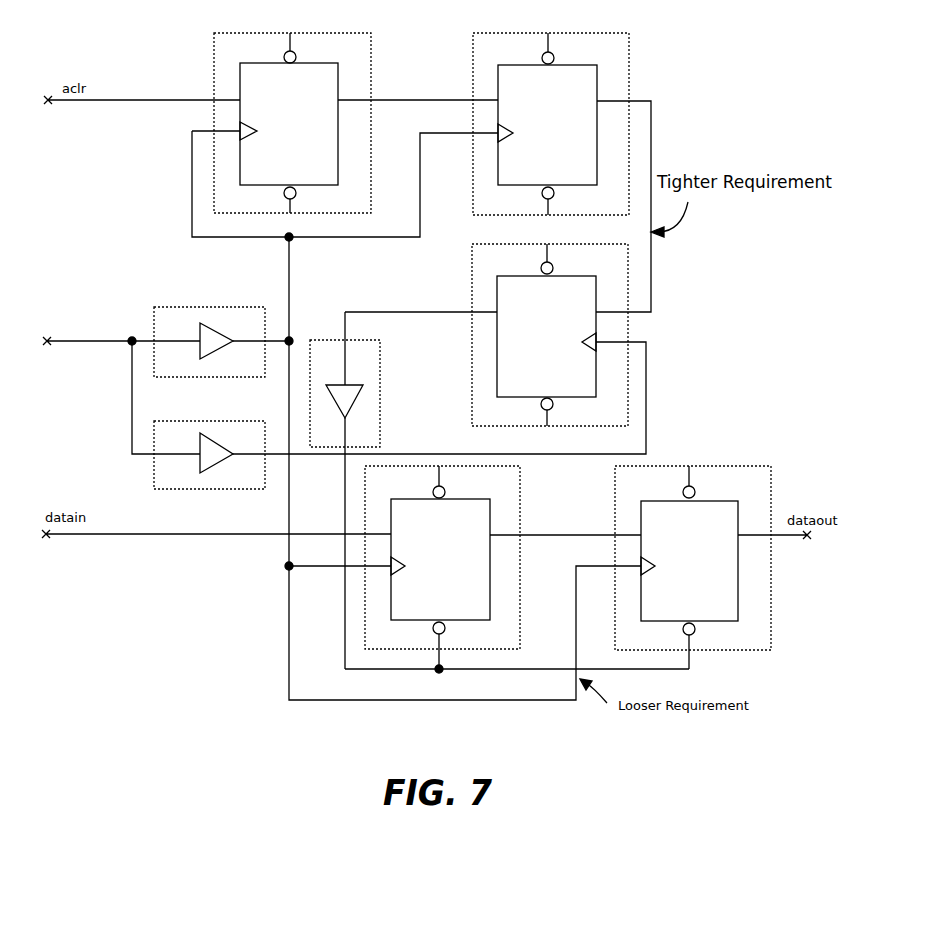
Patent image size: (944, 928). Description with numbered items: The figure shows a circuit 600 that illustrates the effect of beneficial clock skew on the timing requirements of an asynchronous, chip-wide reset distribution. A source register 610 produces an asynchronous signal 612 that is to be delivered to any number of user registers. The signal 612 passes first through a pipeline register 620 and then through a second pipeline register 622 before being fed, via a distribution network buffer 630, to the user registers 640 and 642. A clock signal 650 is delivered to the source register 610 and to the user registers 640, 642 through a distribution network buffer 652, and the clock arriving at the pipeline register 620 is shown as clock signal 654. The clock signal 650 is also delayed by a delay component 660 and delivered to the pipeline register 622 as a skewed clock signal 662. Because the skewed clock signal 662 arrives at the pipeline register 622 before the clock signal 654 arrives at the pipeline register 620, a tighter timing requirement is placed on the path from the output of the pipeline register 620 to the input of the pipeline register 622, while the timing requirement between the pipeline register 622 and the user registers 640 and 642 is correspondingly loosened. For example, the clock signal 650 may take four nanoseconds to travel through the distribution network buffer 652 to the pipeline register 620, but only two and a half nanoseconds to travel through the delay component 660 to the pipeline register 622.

The circuit 600 is at (174, 741).
The source register 610 is at (276, 134).
The asynchronous signal 612 is at (397, 100).
The pipeline register 620 is at (534, 136).
The pipeline register 622 is at (533, 347).
The distribution network buffer 630 is at (323, 340).
The user register 640 is at (426, 569).
The user register 642 is at (675, 569).
The clock signal 650 is at (91, 340).
The distribution network buffer 652 is at (243, 315).
The clock signal 654 is at (289, 635).
The delay component 660 is at (155, 472).
The clock signal 662 is at (647, 397).